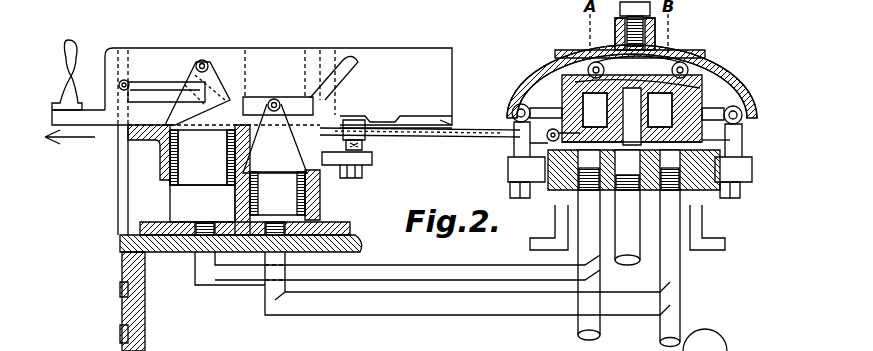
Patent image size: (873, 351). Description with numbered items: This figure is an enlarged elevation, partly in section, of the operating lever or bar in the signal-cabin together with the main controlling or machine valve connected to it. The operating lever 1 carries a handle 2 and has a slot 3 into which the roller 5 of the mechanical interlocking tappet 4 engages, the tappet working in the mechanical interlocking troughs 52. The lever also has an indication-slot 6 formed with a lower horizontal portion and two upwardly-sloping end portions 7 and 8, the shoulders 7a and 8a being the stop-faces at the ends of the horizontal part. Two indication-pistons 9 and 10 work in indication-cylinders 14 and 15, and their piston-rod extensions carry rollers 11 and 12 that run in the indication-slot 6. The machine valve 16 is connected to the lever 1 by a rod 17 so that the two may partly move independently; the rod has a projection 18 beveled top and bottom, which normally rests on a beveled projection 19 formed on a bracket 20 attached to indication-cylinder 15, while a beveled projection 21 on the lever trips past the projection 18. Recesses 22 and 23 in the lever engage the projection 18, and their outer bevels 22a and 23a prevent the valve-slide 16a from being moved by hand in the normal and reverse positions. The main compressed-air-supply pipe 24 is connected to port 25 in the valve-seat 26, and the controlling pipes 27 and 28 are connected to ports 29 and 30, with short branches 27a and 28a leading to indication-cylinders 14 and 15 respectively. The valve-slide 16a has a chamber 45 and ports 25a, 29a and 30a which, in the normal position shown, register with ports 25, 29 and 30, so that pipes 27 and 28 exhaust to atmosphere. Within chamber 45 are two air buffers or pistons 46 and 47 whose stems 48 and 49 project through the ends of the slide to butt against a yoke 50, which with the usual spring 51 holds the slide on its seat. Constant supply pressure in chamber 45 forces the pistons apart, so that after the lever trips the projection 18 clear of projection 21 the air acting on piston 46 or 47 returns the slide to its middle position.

The operating lever 1 is at (278, 86).
The handle 2 is at (68, 42).
The slot 3 is at (145, 95).
The mechanical interlocking tappet 4 is at (118, 181).
The roller 5 is at (124, 80).
The indication-slot 6 is at (250, 100).
The upwardly-sloping end portion 7 is at (223, 95).
The shoulder 7a is at (240, 122).
The upwardly-sloping end portion 8 is at (346, 65).
The shoulder 8a is at (328, 98).
The indication-piston 9 is at (202, 157).
The indication-piston 10 is at (277, 193).
The roller 11 is at (202, 60).
The roller 12 is at (276, 100).
The indication-cylinder 14 is at (202, 203).
The indication-cylinder 15 is at (321, 218).
The machine valve 16 is at (626, 25).
The valve-slide 16a is at (575, 82).
The rod 17 is at (455, 138).
The projection 18 is at (354, 130).
The beveled projection 19 is at (362, 145).
The bracket 20 is at (372, 162).
The beveled projection 21 is at (400, 120).
The recess 22 is at (396, 112).
The outer bevel 22a is at (345, 116).
The recess 23 is at (432, 105).
The outer bevel 23a is at (442, 122).
The main compressed-air-supply pipe 24 is at (627, 227).
The port 25 is at (634, 170).
The port 25a is at (690, 95).
The valve-seat 26 is at (700, 210).
The controlling pipe 27 is at (589, 265).
The branch pipe 27a is at (397, 268).
The controlling pipe 28 is at (672, 265).
The branch pipe 28a is at (467, 283).
The port 29 is at (545, 224).
The port 29a is at (547, 140).
The port 30 is at (690, 190).
The port 30a is at (740, 143).
The chamber 45 is at (596, 66).
The air buffer 46 is at (595, 110).
The air buffer 47 is at (660, 110).
The stem 48 is at (535, 137).
The stem 49 is at (727, 137).
The yoke 50 is at (742, 90).
The spring 51 is at (680, 62).
The mechanical interlocking troughs 52 is at (146, 305).